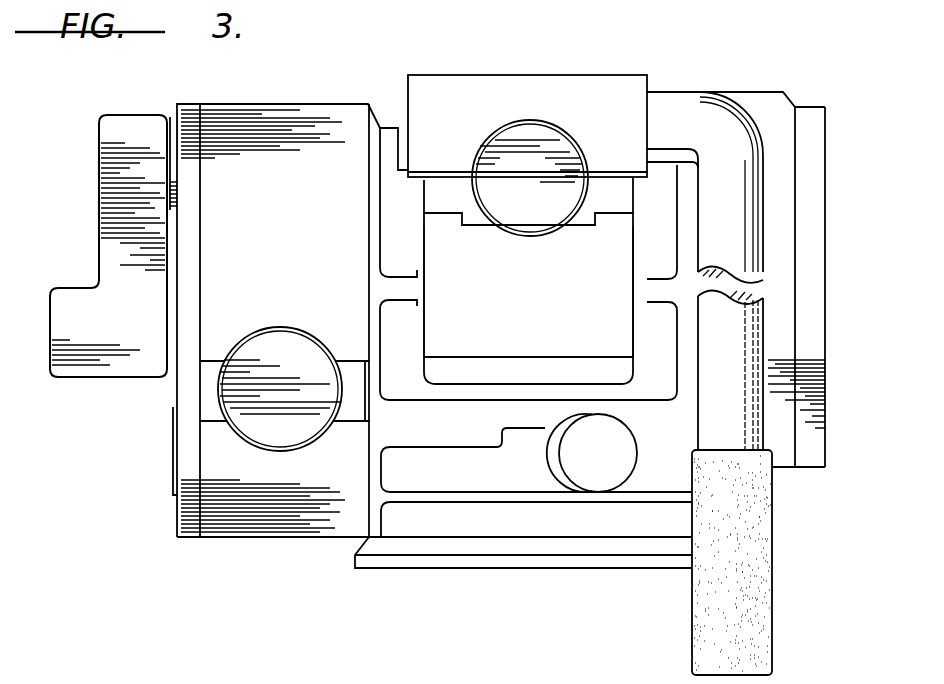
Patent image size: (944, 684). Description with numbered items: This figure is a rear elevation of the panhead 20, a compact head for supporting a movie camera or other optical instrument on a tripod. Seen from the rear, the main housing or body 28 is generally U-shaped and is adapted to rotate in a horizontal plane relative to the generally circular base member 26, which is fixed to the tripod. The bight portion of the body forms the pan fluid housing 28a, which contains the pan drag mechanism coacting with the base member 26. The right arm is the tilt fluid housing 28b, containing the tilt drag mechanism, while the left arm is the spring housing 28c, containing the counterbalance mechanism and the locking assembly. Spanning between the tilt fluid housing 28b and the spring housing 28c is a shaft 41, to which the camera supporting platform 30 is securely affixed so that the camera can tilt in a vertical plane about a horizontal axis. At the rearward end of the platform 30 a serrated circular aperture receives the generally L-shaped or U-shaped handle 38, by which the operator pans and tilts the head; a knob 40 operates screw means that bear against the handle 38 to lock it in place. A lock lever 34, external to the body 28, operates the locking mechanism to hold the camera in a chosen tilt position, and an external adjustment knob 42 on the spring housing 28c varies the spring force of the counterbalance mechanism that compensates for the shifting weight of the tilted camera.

The panhead 20 is at (782, 30).
The base member 26 is at (522, 566).
The main housing or body 28 is at (190, 518).
The pan fluid housing 28a is at (407, 478).
The tilt fluid housing 28b is at (815, 173).
The spring housing 28c is at (270, 118).
The camera supporting platform 30 is at (478, 90).
The lock lever 34 is at (120, 190).
The handle 38 is at (698, 110).
The knob 40 is at (546, 192).
The shaft 41 is at (463, 293).
The external adjustment knob 42 is at (258, 350).